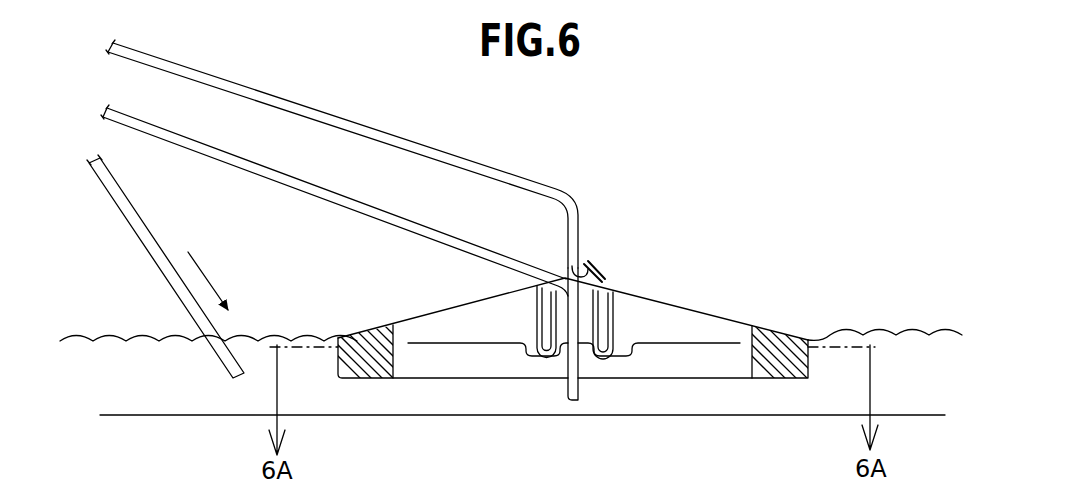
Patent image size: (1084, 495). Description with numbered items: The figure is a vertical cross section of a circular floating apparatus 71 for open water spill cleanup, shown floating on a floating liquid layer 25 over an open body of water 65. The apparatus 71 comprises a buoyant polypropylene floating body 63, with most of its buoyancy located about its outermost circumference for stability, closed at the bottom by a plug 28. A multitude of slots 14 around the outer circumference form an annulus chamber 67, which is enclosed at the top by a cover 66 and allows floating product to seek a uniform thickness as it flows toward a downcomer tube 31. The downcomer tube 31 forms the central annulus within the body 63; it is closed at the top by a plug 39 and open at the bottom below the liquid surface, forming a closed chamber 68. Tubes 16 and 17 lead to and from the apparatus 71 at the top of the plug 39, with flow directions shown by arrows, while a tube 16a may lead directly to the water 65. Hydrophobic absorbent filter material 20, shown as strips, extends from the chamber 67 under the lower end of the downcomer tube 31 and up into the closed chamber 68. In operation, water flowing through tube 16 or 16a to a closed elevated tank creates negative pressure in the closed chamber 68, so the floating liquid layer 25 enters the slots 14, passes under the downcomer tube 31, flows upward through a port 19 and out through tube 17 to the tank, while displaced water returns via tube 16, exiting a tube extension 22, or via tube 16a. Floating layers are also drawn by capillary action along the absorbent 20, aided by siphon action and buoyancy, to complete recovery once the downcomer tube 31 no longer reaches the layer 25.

The slots 14 is at (832, 330).
The tube 16 is at (382, 188).
The tube 16a is at (172, 293).
The tube 17 is at (443, 150).
The port 19 is at (583, 277).
The hydrophobic absorbent filter material 20 is at (693, 343).
The tube extension 22 is at (580, 400).
The floating liquid layer 25 is at (184, 34).
The plug 28 is at (457, 378).
The downcomer tube 31 is at (613, 322).
The plug 39 is at (592, 284).
The floating body 63 is at (798, 307).
The open body of water 65 is at (318, 215).
The cover 66 is at (422, 312).
The annulus chamber 67 is at (648, 300).
The closed chamber 68 is at (616, 292).
The circular floating apparatus 71 is at (800, 190).